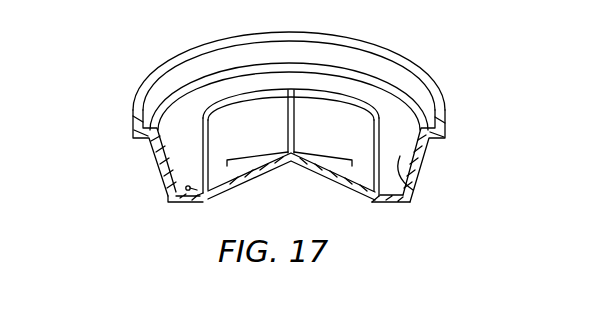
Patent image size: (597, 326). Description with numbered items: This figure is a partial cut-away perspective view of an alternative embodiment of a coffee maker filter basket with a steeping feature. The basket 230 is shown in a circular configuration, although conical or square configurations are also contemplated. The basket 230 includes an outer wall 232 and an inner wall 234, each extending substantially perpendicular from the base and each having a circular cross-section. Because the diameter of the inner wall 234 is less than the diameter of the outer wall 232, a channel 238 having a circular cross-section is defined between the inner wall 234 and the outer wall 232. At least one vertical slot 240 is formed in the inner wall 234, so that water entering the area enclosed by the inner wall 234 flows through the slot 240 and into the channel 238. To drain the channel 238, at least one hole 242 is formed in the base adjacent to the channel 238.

The basket 230 is at (321, 128).
The outer wall 232 is at (151, 156).
The inner wall 234 is at (358, 163).
The channel 238 is at (420, 177).
The vertical slot 240 is at (291, 80).
The hole 242 is at (168, 202).